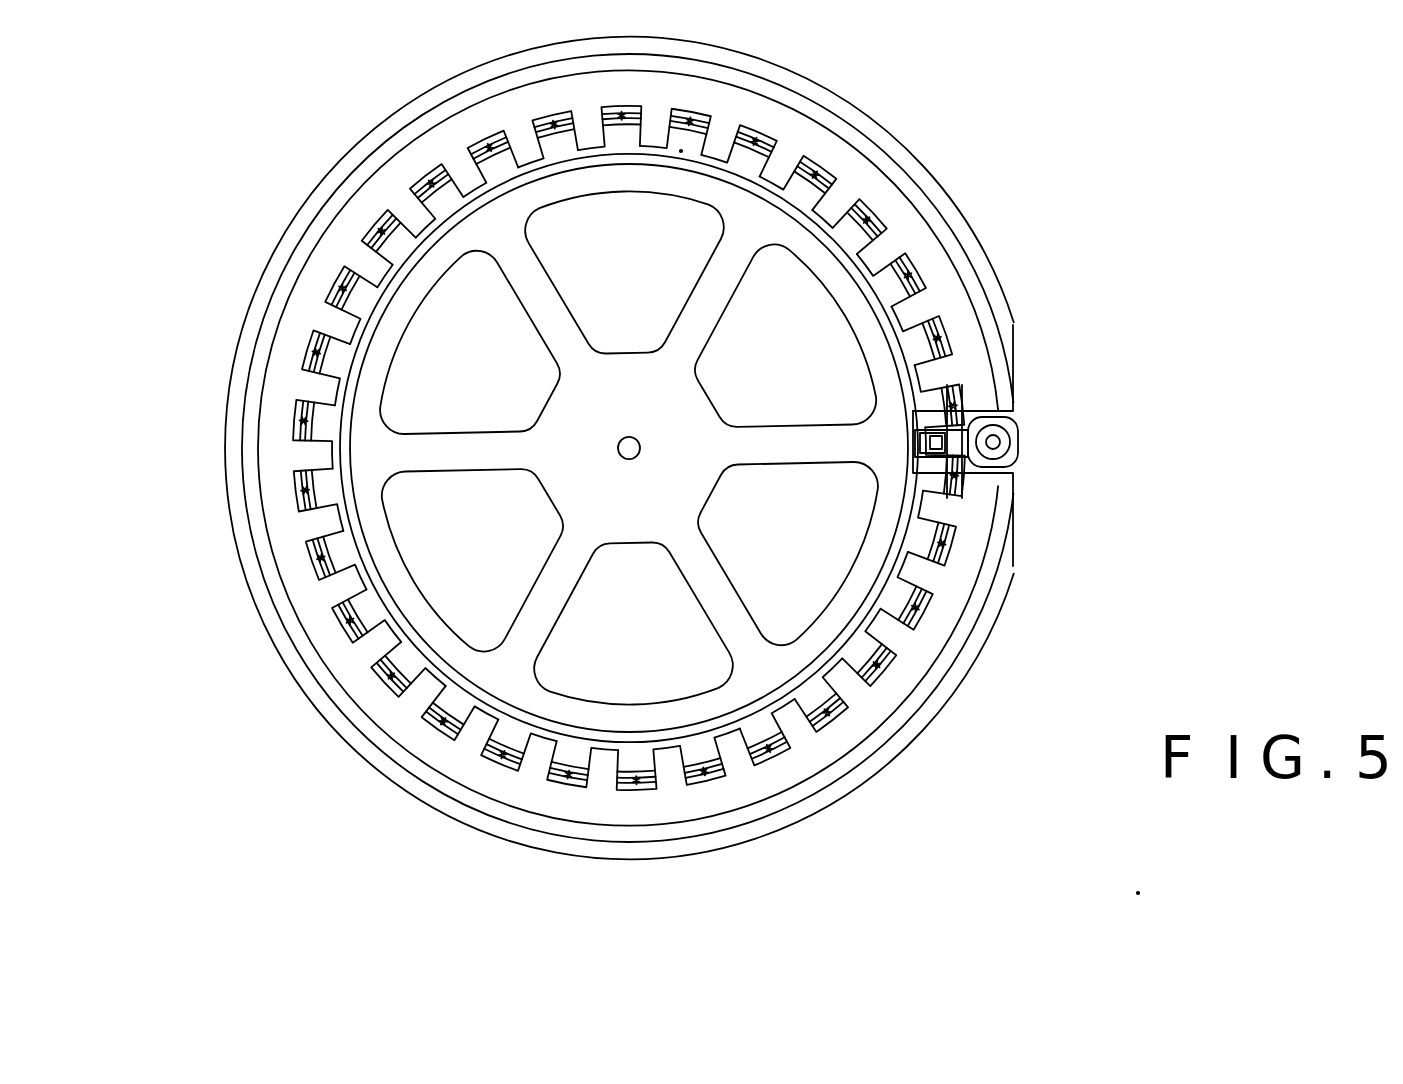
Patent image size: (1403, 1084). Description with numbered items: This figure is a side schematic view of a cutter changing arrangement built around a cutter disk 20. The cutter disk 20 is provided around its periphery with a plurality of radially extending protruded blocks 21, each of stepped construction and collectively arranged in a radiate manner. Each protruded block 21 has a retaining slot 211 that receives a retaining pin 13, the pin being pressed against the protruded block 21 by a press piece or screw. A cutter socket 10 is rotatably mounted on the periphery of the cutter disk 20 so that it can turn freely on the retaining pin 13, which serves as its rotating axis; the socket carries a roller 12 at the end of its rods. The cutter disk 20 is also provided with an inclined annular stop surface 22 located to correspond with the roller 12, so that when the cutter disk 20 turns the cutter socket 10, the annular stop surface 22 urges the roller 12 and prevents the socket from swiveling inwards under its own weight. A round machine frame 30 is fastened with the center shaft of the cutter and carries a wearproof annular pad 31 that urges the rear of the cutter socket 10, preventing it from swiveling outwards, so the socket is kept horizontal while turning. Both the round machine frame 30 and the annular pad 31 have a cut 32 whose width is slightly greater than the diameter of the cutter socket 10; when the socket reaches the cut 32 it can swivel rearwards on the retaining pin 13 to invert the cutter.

The cutter socket 10 is at (1020, 431).
The roller 12 is at (915, 446).
The retaining pin 13 is at (967, 473).
The cutter disk 20 is at (838, 285).
The protruded block 21 is at (893, 297).
The retaining slot 211 is at (903, 262).
The annular stop surface 22 is at (905, 553).
The round machine frame 30 is at (1000, 598).
The annular pad 31 is at (1000, 346).
The cut 32 is at (1018, 466).